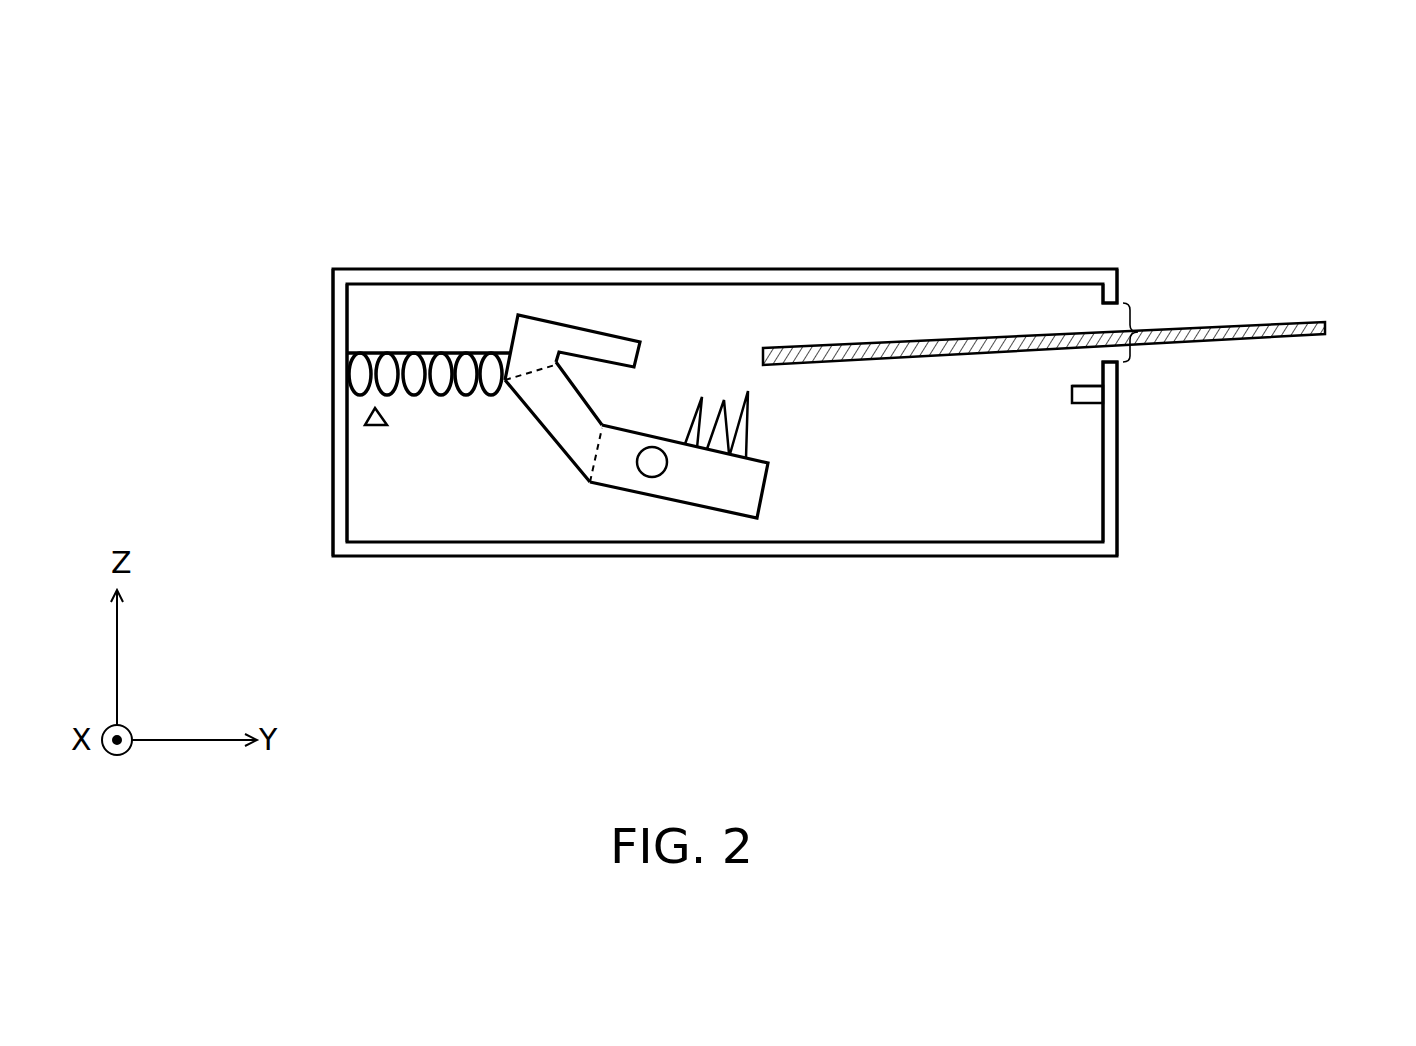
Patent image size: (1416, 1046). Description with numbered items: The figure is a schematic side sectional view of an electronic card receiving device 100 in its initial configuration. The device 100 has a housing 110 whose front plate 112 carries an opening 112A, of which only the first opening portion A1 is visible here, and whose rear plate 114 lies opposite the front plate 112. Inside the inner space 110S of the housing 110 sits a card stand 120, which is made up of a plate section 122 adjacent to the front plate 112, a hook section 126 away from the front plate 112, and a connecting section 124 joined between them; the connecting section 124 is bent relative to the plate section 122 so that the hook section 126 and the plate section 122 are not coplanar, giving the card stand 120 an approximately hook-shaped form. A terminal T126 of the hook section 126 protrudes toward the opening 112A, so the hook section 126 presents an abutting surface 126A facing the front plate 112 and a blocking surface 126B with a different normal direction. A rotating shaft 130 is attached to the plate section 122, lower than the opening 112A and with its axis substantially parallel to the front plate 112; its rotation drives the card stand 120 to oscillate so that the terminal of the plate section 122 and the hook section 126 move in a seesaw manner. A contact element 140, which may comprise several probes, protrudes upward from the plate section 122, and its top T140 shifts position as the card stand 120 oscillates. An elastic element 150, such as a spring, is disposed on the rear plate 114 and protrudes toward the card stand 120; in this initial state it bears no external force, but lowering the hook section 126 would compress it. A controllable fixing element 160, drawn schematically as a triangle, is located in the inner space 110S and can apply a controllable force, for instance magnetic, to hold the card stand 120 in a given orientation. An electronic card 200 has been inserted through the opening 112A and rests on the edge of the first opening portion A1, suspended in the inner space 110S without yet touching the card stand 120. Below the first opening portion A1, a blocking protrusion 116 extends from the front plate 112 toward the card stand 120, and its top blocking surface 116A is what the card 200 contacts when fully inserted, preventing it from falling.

The electronic card receiving device 100 is at (234, 270).
The housing 110 is at (942, 268).
The inner space 110S is at (850, 303).
The front plate 112 is at (1110, 480).
The opening 112A is at (1210, 315).
The first opening portion A1 is at (1138, 332).
The rear plate 114 is at (338, 512).
The blocking protrusion 116 is at (1087, 393).
The blocking surface 116A is at (1095, 371).
The card stand 120 is at (153, 38).
The plate section 122 is at (725, 493).
The connecting section 124 is at (550, 412).
The hook section 126 is at (538, 333).
The abutting surface 126A is at (568, 370).
The blocking surface 126B is at (620, 384).
The rotating shaft 130 is at (652, 468).
The contact element 140 is at (750, 447).
The elastic element 150 is at (457, 327).
The controllable fixing element 160 is at (367, 448).
The electronic card 200 is at (1327, 330).
The terminal of the hook section T126 is at (609, 333).
The top of the contact element T140 is at (747, 388).